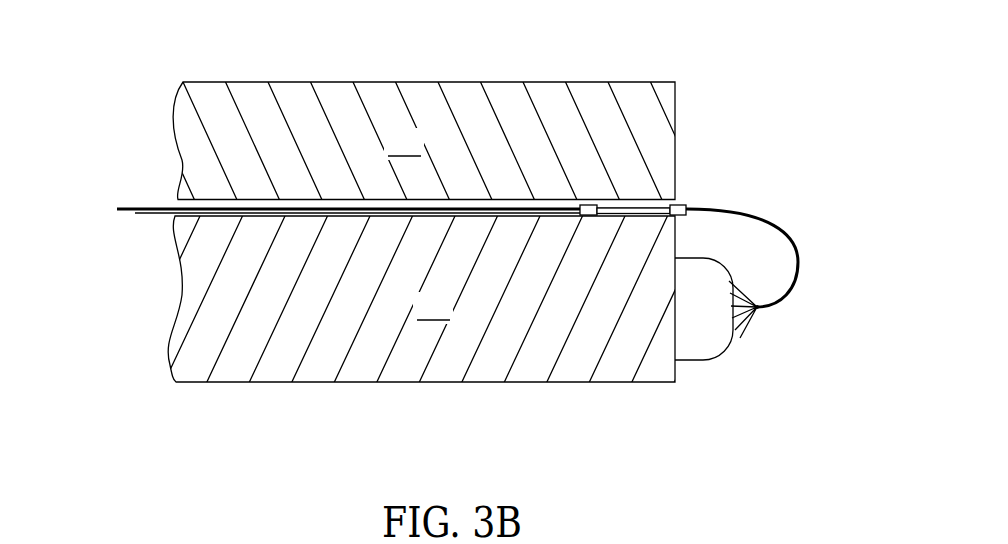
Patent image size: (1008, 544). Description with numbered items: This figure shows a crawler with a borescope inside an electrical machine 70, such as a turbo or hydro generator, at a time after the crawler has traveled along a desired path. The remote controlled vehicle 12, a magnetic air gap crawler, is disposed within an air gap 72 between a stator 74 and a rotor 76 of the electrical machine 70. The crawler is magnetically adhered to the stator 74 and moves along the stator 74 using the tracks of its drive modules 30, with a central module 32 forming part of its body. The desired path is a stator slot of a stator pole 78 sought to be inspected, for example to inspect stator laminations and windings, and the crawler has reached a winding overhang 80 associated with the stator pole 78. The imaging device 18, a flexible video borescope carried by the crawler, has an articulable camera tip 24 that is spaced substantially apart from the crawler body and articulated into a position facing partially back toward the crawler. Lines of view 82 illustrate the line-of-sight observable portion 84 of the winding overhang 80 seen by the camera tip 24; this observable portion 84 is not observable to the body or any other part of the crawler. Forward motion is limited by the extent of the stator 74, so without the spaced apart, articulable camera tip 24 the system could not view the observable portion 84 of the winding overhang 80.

The electrical machine 70 is at (736, 62).
The remote controlled vehicle 12 is at (694, 199).
The imaging device 18 is at (134, 214).
The camera tip 24 is at (760, 310).
The drive modules 30 is at (630, 214).
The central module 32 is at (685, 215).
The air gap 72 is at (183, 206).
The stator 74 is at (450, 320).
The rotor 76 is at (421, 156).
The stator pole 78 is at (157, 299).
The winding overhang 80 is at (687, 362).
The lines of view 82 is at (747, 288).
The observable portion 84 is at (735, 329).